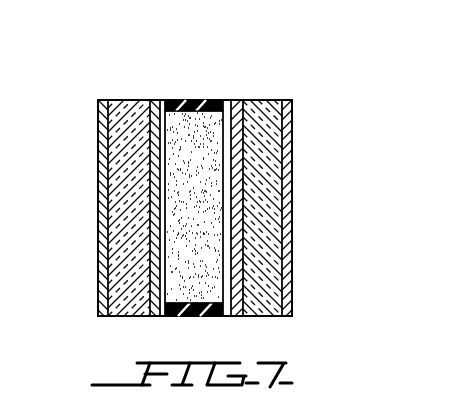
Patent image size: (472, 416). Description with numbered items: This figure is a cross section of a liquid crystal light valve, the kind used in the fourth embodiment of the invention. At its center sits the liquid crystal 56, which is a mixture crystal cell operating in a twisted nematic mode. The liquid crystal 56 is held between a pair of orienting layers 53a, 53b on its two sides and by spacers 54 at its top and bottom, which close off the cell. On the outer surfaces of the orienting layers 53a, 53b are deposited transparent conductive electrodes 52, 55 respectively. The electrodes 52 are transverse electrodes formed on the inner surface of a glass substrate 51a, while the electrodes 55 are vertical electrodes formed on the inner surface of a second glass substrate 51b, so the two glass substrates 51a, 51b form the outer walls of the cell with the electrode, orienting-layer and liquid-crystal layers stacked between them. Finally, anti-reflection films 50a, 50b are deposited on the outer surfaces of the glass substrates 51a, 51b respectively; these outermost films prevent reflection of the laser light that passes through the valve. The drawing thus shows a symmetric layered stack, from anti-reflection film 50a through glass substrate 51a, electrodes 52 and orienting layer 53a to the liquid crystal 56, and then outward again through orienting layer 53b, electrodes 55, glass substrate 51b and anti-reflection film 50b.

The anti-reflection film 50a is at (98, 209).
The anti-reflection film 50b is at (292, 222).
The glass substrate 51a is at (125, 100).
The glass substrate 51b is at (263, 100).
The transparent conductive electrodes 52 is at (150, 100).
The transparent conductive electrodes 55 is at (237, 100).
The orienting layer 53a is at (162, 100).
The orienting layer 53b is at (227, 100).
The spacers 54 is at (198, 100).
The liquid crystal 56 is at (205, 178).